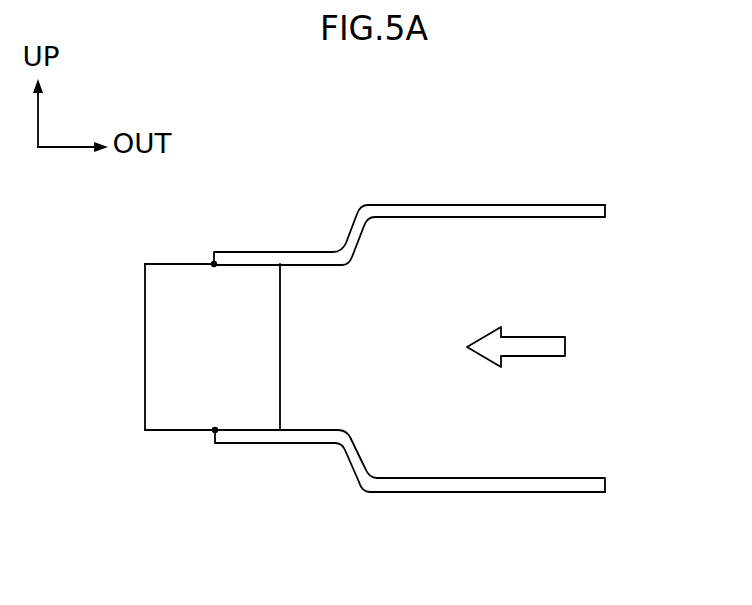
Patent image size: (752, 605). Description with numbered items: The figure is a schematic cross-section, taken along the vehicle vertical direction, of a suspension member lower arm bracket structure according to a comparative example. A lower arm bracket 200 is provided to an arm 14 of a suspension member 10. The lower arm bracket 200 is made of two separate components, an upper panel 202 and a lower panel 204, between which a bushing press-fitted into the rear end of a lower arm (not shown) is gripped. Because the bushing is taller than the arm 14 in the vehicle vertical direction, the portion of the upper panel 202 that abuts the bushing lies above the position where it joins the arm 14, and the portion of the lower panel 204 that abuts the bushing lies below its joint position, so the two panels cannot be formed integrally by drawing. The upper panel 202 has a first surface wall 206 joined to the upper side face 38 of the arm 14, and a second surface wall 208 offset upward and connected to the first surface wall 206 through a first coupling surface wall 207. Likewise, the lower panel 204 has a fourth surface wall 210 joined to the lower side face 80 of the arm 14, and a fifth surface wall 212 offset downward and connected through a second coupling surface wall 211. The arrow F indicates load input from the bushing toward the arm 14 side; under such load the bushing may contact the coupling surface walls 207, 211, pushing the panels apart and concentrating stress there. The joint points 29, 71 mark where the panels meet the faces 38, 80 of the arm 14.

The suspension member 10 is at (212, 347).
The arm 14 is at (146, 261).
The upper joint point 29 is at (216, 260).
The upper side face 38 is at (185, 262).
The lower joint point 71 is at (213, 433).
The lower side face 80 is at (155, 432).
The lower arm bracket 200 is at (590, 160).
The upper panel 202 is at (402, 183).
The lower panel 204 is at (399, 503).
The first surface wall 206 is at (265, 260).
The first coupling surface wall 207 is at (350, 226).
The second surface wall 208 is at (480, 205).
The fourth surface wall 210 is at (262, 438).
The second coupling surface wall 211 is at (350, 462).
The fifth surface wall 212 is at (524, 490).
The arrow F is at (530, 337).